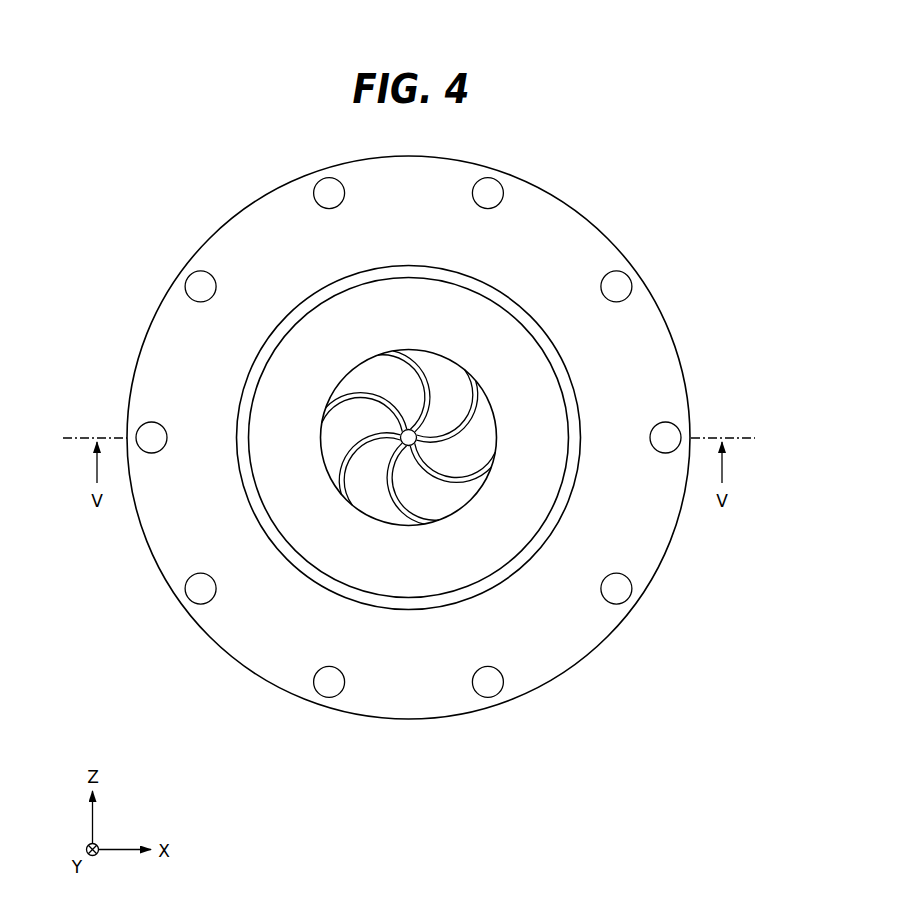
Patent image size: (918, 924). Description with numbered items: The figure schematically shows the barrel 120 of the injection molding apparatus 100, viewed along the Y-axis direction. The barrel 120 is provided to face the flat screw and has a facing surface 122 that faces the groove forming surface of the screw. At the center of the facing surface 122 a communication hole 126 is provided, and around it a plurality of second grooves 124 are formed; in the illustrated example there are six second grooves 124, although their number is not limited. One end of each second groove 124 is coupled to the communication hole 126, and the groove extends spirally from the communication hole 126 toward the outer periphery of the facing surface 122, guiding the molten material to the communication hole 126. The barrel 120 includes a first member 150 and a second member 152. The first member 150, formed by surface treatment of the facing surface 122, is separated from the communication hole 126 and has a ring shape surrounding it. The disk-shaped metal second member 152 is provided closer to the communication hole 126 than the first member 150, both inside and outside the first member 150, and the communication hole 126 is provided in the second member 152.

The blower device 100 is at (403, 463).
The barrel 120 is at (605, 197).
The facing surface 122 is at (440, 617).
The second groove 124 is at (395, 352).
The communication hole 126 is at (393, 442).
The first member 150 is at (295, 367).
The second member 152 is at (342, 397).